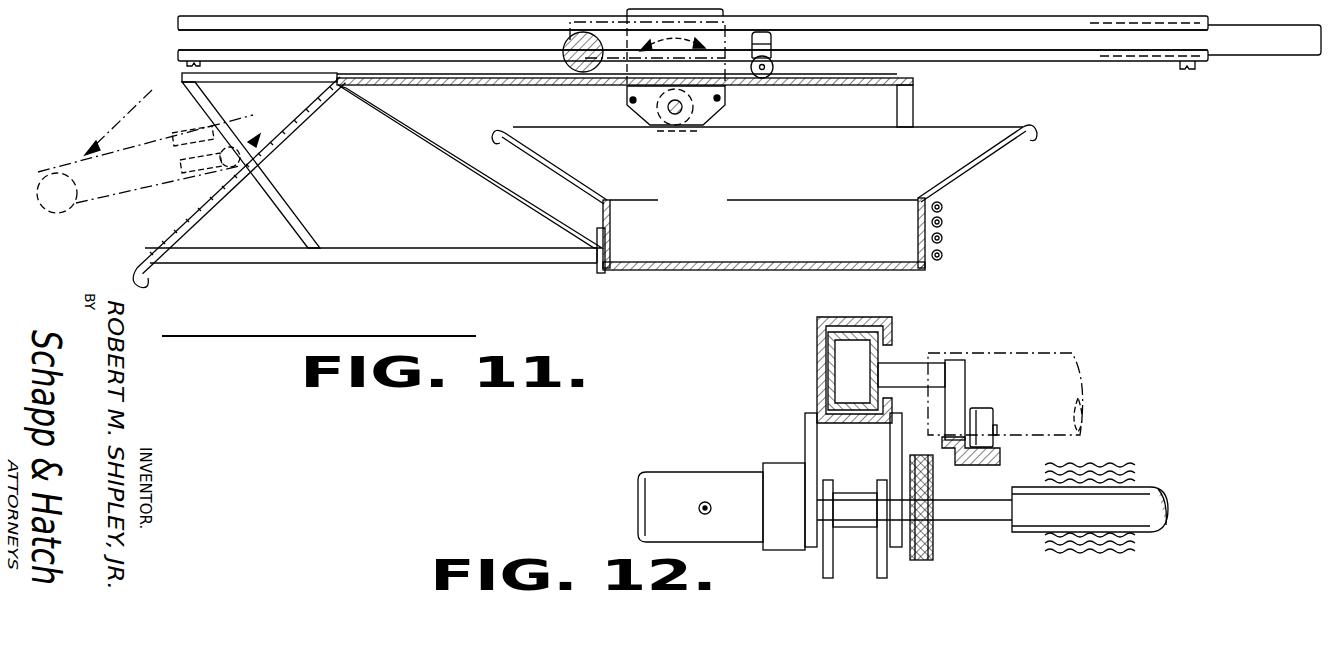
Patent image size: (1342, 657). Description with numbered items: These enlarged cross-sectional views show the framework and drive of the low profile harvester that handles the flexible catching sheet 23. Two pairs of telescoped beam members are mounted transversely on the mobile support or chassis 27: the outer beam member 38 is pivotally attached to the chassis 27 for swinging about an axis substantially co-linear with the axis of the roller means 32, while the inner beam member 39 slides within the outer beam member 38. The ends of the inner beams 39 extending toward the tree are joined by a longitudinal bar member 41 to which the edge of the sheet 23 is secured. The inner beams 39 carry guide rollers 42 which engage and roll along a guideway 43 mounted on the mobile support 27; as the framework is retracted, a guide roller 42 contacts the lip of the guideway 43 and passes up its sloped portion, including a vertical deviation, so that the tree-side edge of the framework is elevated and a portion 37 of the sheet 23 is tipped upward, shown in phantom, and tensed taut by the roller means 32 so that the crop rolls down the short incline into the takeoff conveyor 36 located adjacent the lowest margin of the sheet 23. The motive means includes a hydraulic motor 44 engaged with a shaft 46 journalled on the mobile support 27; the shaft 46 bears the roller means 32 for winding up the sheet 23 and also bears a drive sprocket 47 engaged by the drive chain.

In FIG. 12, the flexible catching sheet 23 is at (1110, 470).
In FIG. 11, the mobile support or chassis 27 is at (478, 266).
In FIG. 11, the roller means 32 is at (658, 120).
In FIG. 12, the roller means 32 is at (1030, 528).
In FIG. 11, the takeoff conveyor 36 is at (945, 197).
In FIG. 11, the portion of the sheet 37 is at (630, 58).
In FIG. 11, the outer beam member 38 is at (237, 17).
In FIG. 12, the outer beam member 38 is at (817, 358).
In FIG. 11, the inner beam member 39 is at (283, 38).
In FIG. 12, the inner beam member 39 is at (880, 366).
In FIG. 11, the longitudinal bar member 41 is at (570, 70).
In FIG. 12, the longitudinal bar member 41 is at (1065, 352).
In FIG. 11, the guide roller 42 is at (764, 78).
In FIG. 12, the guide roller 42 is at (988, 410).
In FIG. 11, the guideway 43 is at (205, 212).
In FIG. 12, the guideway 43 is at (1000, 466).
In FIG. 12, the hydraulic motor 44 is at (696, 478).
In FIG. 11, the shaft 46 is at (677, 113).
In FIG. 12, the shaft 46 is at (853, 500).
In FIG. 12, the drive sprocket 47 is at (934, 525).